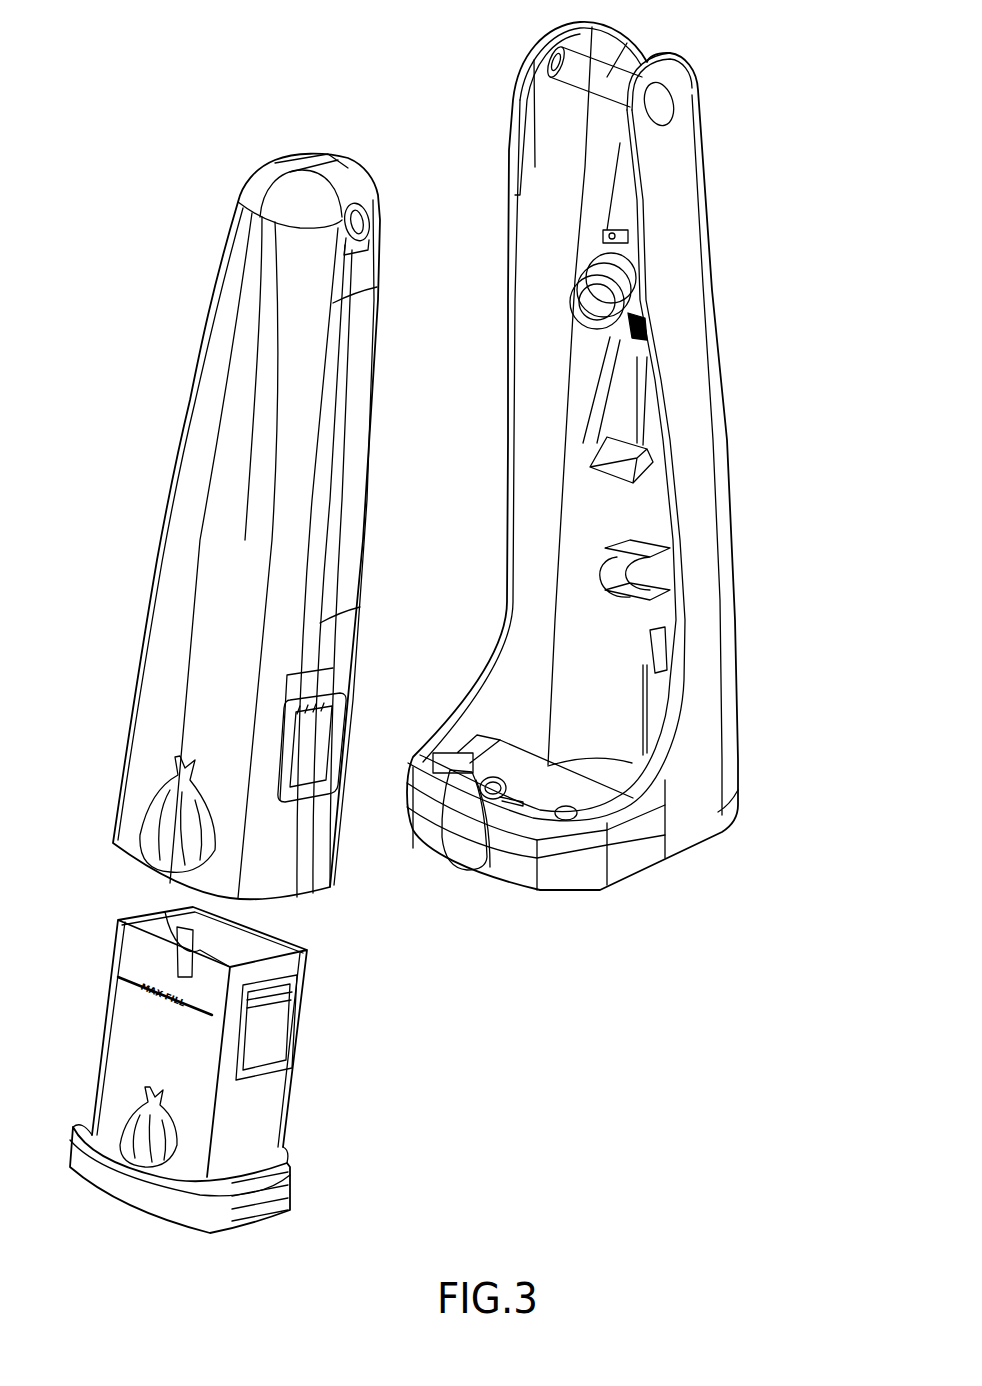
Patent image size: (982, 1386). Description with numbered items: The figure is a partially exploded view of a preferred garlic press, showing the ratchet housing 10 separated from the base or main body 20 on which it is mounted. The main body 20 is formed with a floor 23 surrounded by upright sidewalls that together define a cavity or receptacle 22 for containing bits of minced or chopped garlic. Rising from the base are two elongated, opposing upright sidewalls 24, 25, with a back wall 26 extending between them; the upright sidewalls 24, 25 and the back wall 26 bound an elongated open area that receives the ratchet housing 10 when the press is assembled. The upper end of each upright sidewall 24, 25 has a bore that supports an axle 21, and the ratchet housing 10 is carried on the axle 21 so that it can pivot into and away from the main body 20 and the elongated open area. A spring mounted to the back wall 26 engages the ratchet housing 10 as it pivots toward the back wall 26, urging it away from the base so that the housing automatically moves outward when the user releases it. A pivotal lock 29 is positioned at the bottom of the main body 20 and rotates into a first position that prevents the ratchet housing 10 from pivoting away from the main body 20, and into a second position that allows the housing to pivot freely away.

The ratchet housing 10 is at (228, 558).
The base or main body 20 is at (638, 506).
The axle 21 is at (605, 75).
The cavity or receptacle 22 is at (602, 760).
The floor 23 is at (520, 863).
The upright sidewall 24 is at (675, 180).
The upright sidewall 25 is at (557, 168).
The back wall 26 is at (640, 507).
The pivotal lock 29 is at (463, 847).